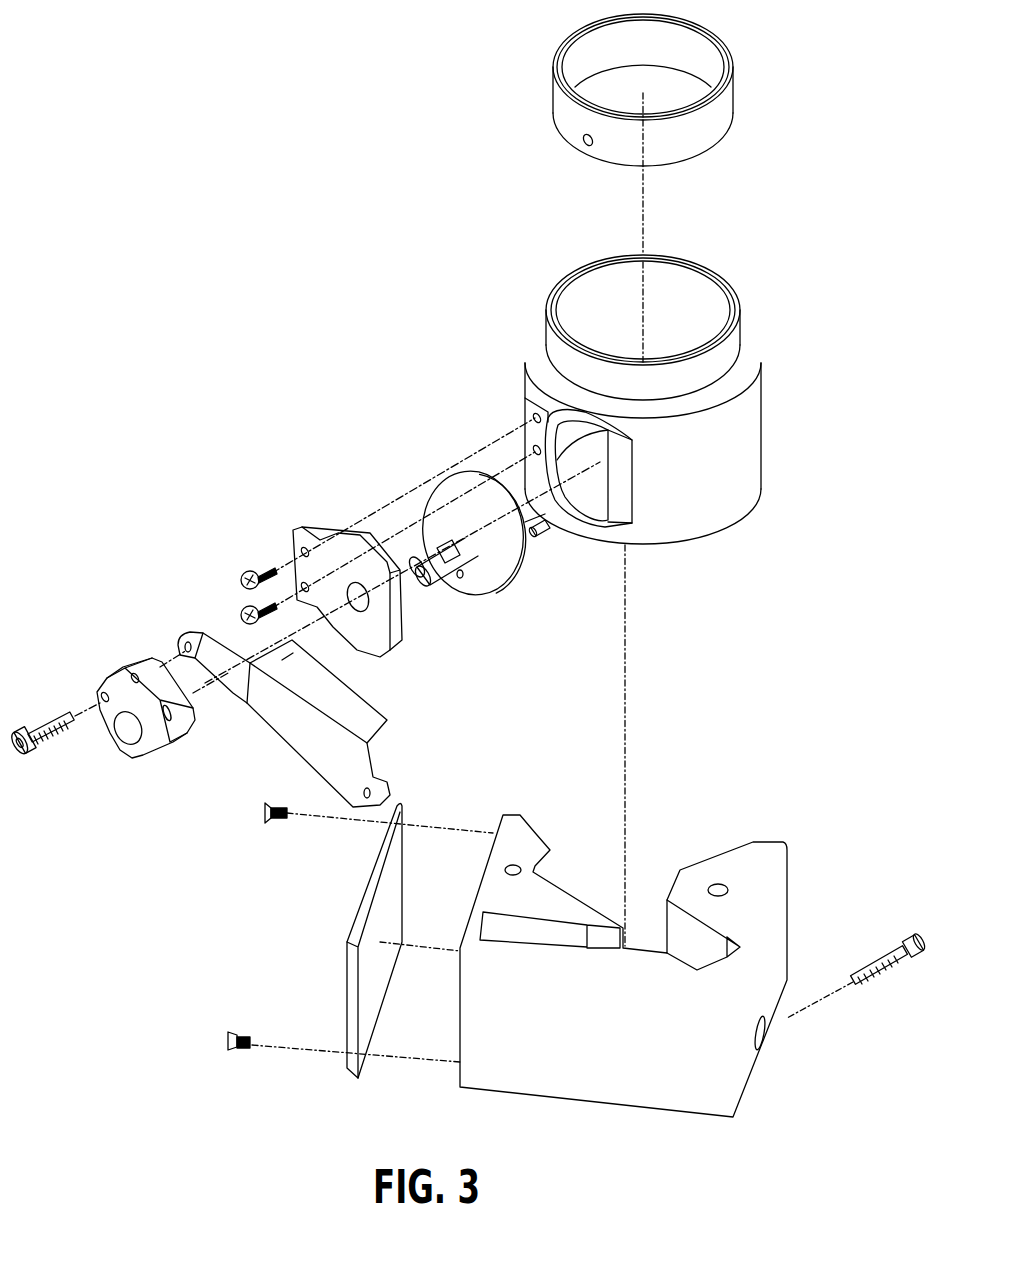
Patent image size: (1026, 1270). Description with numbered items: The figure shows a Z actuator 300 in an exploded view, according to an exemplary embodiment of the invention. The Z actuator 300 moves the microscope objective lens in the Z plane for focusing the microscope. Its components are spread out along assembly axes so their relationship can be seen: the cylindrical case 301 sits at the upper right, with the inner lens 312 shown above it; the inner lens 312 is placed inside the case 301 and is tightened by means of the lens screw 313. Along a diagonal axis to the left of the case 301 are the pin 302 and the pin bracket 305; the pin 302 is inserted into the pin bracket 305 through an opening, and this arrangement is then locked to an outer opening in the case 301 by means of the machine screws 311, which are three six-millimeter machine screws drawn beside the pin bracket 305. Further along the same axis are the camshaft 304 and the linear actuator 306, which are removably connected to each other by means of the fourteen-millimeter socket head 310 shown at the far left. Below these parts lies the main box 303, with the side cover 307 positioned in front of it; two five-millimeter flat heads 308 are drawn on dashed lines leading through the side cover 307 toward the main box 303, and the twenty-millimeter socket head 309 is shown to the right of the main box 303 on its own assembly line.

The Z actuator 300 is at (306, 108).
The case 301 is at (762, 439).
The pin 302 is at (448, 481).
The main box 303 is at (748, 840).
The camshaft 304 is at (136, 665).
The pin bracket 305 is at (320, 538).
The linear actuator 306 is at (393, 720).
The side cover 307 is at (348, 1074).
The M3-5 mm flat heads 308 is at (266, 829).
The M3-20 mm socket head 309 is at (910, 930).
The M3-14 mm socket head 310 is at (31, 728).
The M3-6 mm machine screws 311 is at (252, 569).
The inner lens 312 is at (730, 132).
The lens screw 313 is at (545, 540).